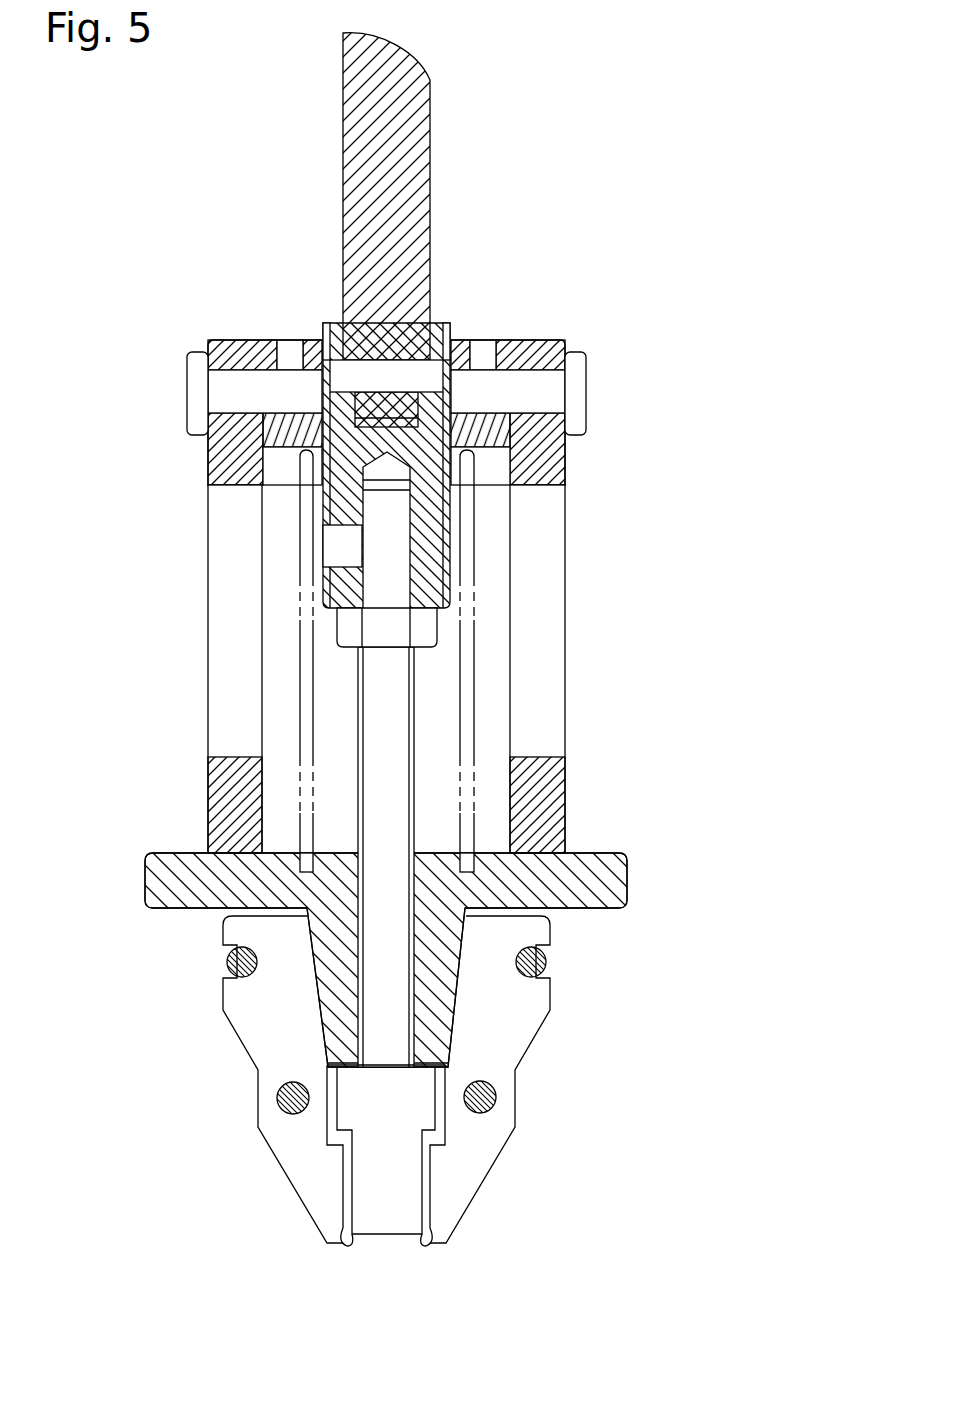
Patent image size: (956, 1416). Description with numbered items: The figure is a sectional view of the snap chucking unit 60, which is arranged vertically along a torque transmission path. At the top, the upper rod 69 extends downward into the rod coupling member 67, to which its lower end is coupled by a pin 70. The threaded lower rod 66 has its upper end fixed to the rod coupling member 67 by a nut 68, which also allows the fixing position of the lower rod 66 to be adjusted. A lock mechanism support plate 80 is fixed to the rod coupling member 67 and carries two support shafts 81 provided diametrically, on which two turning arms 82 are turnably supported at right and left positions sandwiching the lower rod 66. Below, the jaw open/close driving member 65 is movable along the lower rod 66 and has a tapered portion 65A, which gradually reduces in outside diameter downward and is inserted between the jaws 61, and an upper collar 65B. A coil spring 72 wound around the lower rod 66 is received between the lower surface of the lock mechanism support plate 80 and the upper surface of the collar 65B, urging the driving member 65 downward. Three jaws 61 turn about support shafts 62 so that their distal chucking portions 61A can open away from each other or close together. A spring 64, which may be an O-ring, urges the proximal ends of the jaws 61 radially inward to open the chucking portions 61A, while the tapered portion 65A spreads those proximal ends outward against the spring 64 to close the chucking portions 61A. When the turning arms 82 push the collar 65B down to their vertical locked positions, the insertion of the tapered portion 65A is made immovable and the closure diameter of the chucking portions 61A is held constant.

The snap chucking unit 60 is at (558, 167).
The jaw 61 is at (533, 1033).
The chucking portion 61A is at (355, 1250).
The support shaft 62 is at (277, 1095).
The spring 64 is at (547, 952).
The jaw open/close driving member 65 is at (630, 855).
The tapered portion 65A is at (310, 1003).
The upper collar 65B is at (145, 857).
The lower rod 66 is at (415, 742).
The rod coupling member 67 is at (453, 522).
The nut 68 is at (438, 628).
The upper rod 69 is at (431, 188).
The pin 70 is at (443, 327).
The spring 72 is at (473, 588).
The lock mechanism support plate 80 is at (283, 450).
The support shaft 81 is at (248, 380).
The turning arm 82 is at (208, 793).